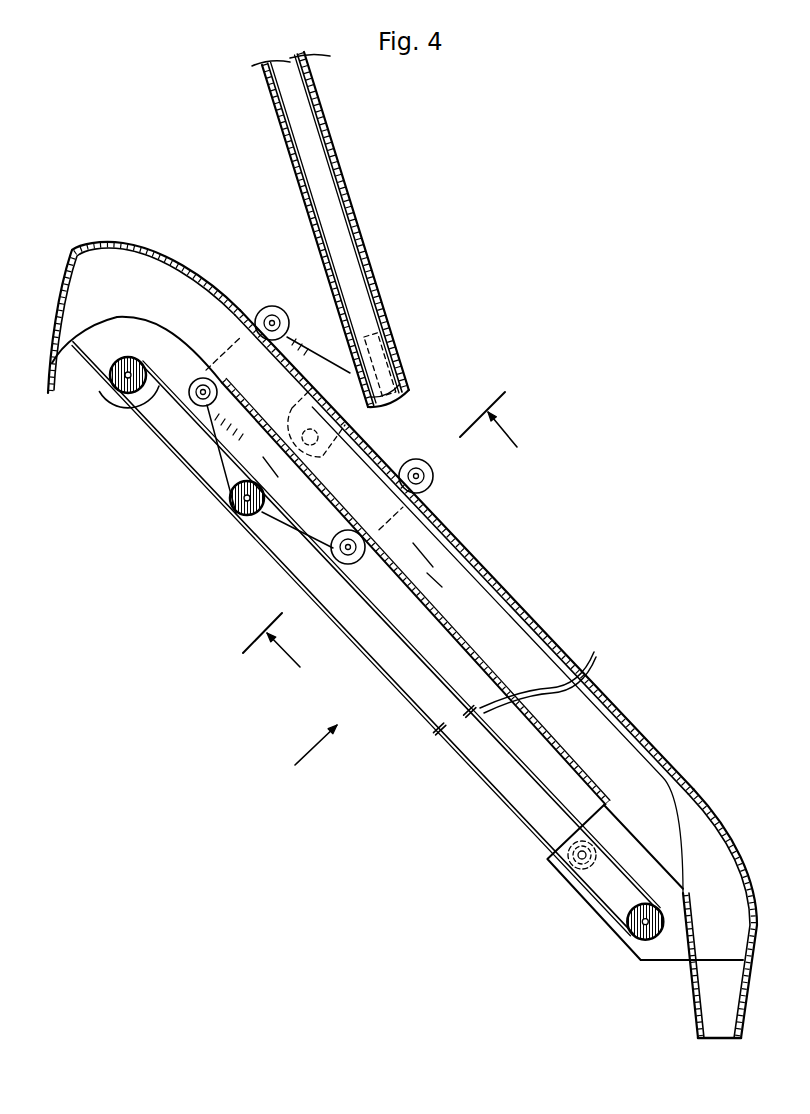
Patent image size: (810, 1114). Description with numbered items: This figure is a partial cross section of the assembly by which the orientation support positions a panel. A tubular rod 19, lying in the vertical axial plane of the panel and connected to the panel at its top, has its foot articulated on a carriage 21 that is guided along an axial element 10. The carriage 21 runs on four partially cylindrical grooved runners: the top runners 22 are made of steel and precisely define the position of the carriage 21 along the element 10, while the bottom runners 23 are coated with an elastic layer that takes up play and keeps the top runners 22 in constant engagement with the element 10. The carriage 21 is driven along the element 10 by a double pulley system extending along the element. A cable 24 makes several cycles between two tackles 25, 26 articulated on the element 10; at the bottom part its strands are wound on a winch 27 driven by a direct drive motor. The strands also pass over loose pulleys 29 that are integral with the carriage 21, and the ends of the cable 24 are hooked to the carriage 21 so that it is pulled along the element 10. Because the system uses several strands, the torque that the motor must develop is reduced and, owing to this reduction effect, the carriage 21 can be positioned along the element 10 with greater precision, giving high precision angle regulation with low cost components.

The axial element 10 is at (513, 648).
The tubular rod 19 is at (356, 214).
The carriage 21 is at (273, 306).
The top runners 22 is at (430, 470).
The bottom runners 23 is at (335, 553).
The cable 24 is at (512, 806).
The tackle 25 is at (105, 399).
The tackle 26 is at (630, 940).
The winch 27 is at (556, 880).
The loose pulleys 29 is at (230, 498).